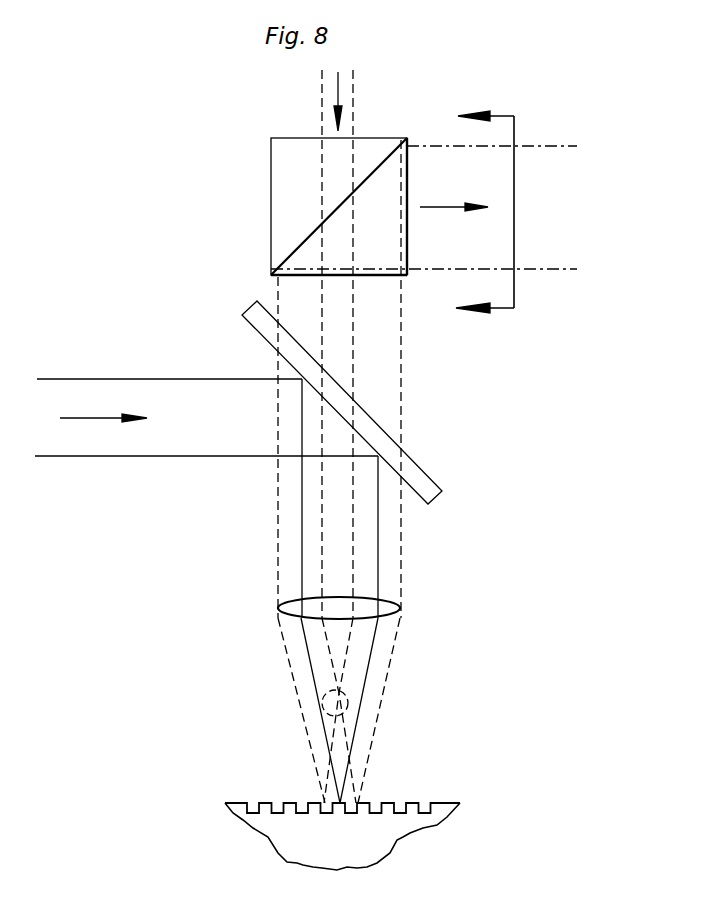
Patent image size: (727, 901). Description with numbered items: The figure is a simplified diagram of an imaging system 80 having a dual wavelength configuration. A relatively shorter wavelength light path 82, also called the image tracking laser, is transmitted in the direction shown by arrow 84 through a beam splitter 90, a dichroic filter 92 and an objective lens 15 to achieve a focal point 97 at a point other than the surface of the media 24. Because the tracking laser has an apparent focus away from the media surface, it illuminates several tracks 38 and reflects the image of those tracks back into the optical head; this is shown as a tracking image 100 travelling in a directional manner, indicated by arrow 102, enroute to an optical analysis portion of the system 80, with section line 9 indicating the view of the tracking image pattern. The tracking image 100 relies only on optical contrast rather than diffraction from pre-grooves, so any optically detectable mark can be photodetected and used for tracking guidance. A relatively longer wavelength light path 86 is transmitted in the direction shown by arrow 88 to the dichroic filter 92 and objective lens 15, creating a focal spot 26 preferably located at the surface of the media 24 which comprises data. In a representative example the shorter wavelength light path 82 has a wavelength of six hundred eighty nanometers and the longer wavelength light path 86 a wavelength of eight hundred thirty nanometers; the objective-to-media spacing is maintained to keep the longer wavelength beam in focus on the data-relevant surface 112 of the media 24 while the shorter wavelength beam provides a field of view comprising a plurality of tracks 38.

The arrow 84 is at (338, 97).
The shorter wavelength light path 82 is at (353, 107).
The beam splitter 90 is at (271, 191).
The tracking image 100 is at (543, 146).
The section line 9- 9 is at (474, 213).
The arrow 102 is at (447, 208).
The imaging system 80 is at (212, 286).
The dichroic filter 92 is at (442, 500).
The longer wavelength light path 86 is at (140, 455).
The arrow 88 is at (93, 418).
The objective lens 15 is at (363, 605).
The focal point 97 is at (360, 712).
The focal spot 26 is at (340, 798).
The media 24 is at (418, 826).
The tracks 38 is at (273, 813).
The data-relevant surface 112 is at (303, 803).